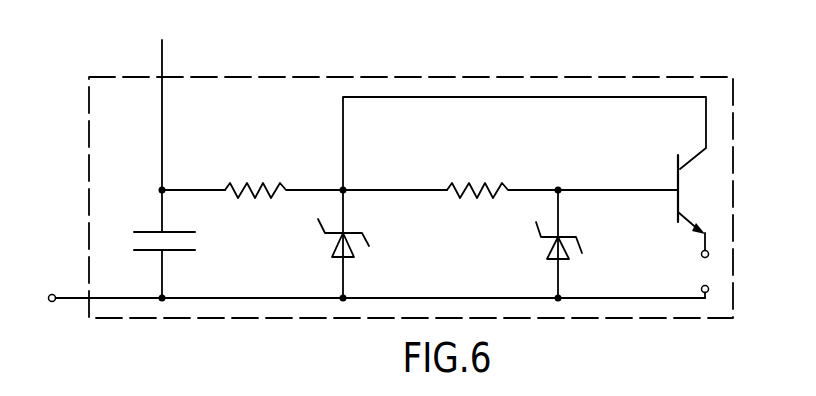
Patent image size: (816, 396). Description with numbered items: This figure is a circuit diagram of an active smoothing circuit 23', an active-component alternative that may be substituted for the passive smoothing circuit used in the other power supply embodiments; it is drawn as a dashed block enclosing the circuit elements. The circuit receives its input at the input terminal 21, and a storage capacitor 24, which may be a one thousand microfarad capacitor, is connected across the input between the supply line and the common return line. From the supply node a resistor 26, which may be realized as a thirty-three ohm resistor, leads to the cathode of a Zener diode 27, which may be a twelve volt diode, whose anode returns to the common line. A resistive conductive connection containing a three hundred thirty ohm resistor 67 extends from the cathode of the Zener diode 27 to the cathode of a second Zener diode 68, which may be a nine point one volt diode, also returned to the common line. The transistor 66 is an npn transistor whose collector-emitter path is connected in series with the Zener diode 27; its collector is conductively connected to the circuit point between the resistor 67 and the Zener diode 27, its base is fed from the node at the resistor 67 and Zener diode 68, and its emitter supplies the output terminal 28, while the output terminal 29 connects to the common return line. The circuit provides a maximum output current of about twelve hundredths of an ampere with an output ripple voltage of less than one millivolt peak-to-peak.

The input terminal 21 is at (54, 294).
The active smoothing circuit 23' is at (411, 183).
The storage capacitor 24 is at (186, 238).
The resistor 26 is at (262, 184).
The Zener diode 27 is at (357, 248).
The output terminal 28 is at (701, 253).
The output terminal 29 is at (701, 289).
The transistor 66 is at (652, 160).
The resistor 67 is at (502, 185).
The Zener diode 68 is at (546, 253).